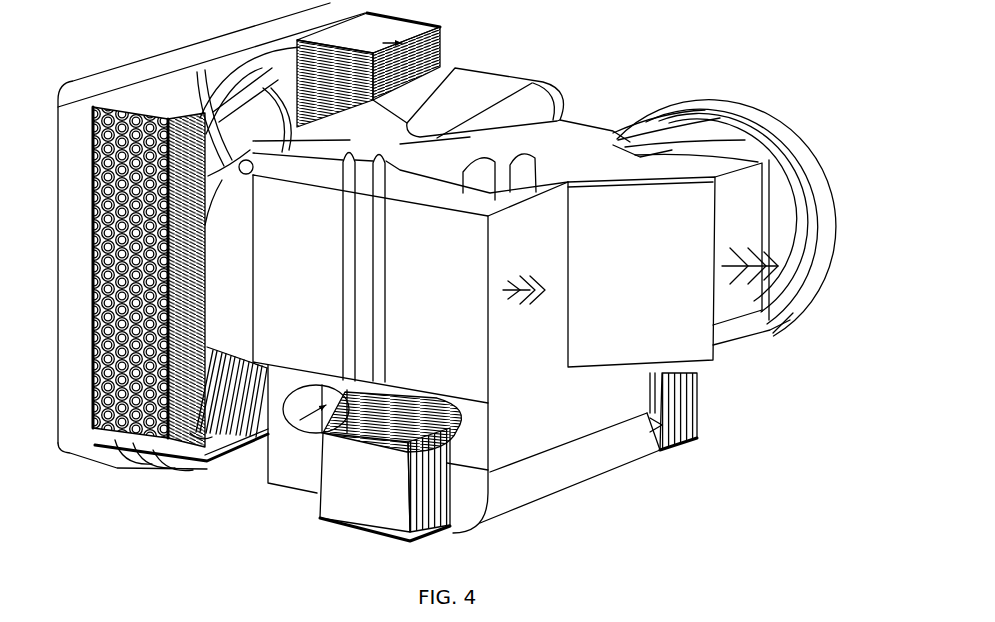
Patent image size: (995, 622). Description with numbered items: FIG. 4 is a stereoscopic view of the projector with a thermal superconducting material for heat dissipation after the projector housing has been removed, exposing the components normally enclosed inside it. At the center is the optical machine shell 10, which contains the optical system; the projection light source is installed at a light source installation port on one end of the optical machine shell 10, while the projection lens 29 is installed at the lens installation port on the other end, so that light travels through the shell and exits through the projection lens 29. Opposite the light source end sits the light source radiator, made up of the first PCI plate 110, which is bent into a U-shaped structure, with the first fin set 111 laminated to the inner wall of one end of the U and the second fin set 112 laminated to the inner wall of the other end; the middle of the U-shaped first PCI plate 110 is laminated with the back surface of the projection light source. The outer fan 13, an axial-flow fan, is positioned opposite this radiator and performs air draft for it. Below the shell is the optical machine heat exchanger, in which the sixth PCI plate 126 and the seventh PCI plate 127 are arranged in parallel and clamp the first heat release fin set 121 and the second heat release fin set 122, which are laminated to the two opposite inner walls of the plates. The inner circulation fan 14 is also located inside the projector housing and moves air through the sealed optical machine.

The optical machine shell 10 is at (580, 128).
The outer fan 13 is at (147, 65).
The inner circulation fan 14 is at (300, 425).
The projection lens 29 is at (730, 105).
The first PCI plate 110 is at (197, 462).
The first fin set 111 is at (442, 50).
The second fin set 112 is at (136, 105).
The first heat release fin set 121 is at (694, 408).
The second heat release fin set 122 is at (394, 481).
The sixth PCI plate 126 is at (383, 447).
The seventh PCI plate 127 is at (423, 540).